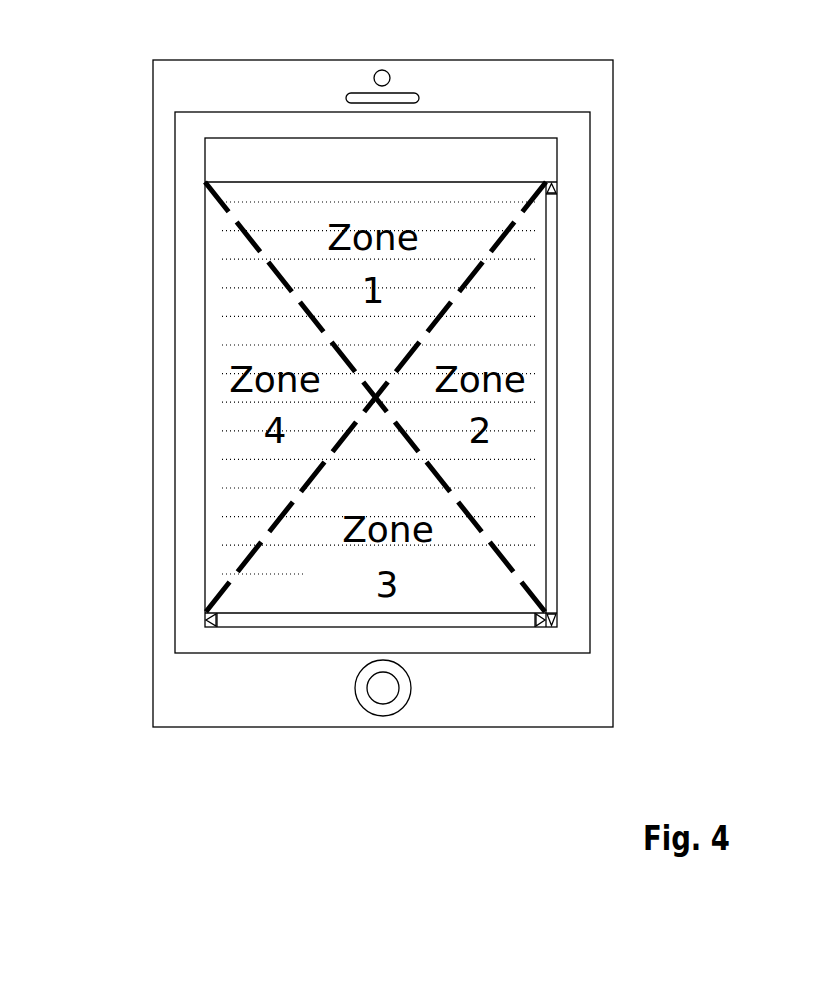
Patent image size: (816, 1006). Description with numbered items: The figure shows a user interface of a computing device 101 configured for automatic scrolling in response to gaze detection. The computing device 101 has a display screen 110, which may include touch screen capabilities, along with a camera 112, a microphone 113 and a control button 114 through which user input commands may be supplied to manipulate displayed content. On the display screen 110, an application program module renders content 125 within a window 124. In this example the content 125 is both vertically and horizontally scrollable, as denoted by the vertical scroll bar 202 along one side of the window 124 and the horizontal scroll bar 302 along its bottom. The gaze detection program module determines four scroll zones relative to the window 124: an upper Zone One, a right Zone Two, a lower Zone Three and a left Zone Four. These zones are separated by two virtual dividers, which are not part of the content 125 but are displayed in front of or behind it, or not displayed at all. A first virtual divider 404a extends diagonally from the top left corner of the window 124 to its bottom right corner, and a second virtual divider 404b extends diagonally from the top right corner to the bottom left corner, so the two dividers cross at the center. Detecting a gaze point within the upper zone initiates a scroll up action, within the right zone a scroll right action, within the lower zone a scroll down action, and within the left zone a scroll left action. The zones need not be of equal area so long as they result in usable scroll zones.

The computing device 101 is at (188, 60).
The display screen 110 is at (570, 323).
The camera 112 is at (385, 69).
The microphone 113 is at (418, 93).
The control button 114 is at (383, 716).
The window 124 is at (205, 210).
The content 125 is at (218, 310).
The vertical scroll bar 202 is at (552, 230).
The horizontal scroll bar 302 is at (498, 615).
The first virtual divider 404a is at (230, 203).
The second virtual divider 404b is at (457, 285).